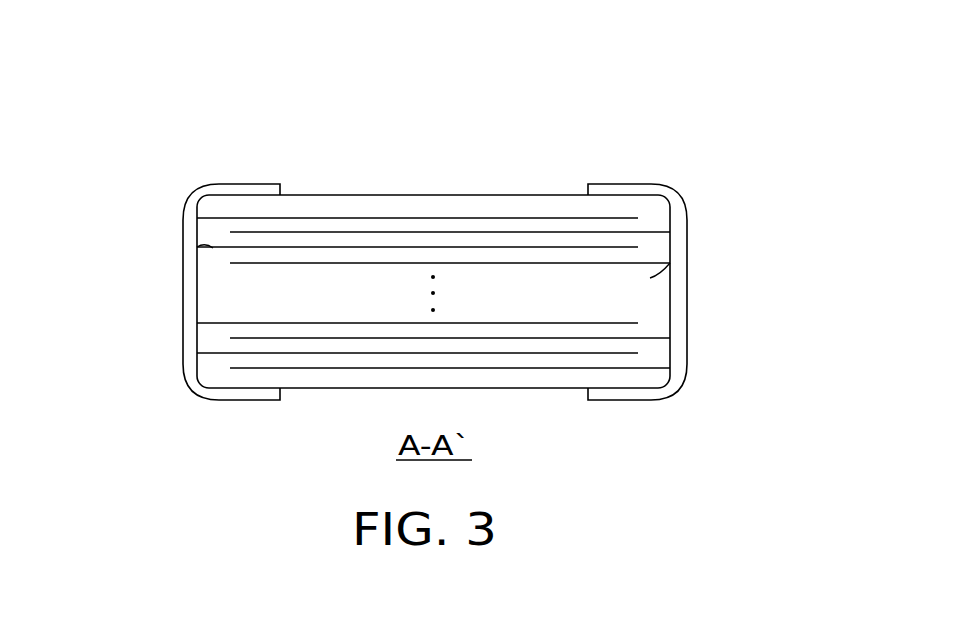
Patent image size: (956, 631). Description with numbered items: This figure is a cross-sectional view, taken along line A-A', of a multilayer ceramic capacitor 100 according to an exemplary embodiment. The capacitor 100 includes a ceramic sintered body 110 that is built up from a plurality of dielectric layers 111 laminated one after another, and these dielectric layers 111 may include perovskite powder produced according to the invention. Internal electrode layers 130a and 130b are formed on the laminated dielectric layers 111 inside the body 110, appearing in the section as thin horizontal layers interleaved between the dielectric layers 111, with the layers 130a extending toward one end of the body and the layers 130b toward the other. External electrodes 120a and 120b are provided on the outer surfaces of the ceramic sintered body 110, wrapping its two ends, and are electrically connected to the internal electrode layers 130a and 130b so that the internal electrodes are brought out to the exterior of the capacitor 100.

The multilayer ceramic capacitor 100 is at (447, 37).
The ceramic sintered body 110 is at (407, 195).
The dielectric layer 111 is at (660, 222).
The external electrode 120a is at (213, 190).
The external electrode 120b is at (673, 193).
The internal electrode layer 130a is at (213, 249).
The internal electrode layer 130b is at (630, 263).